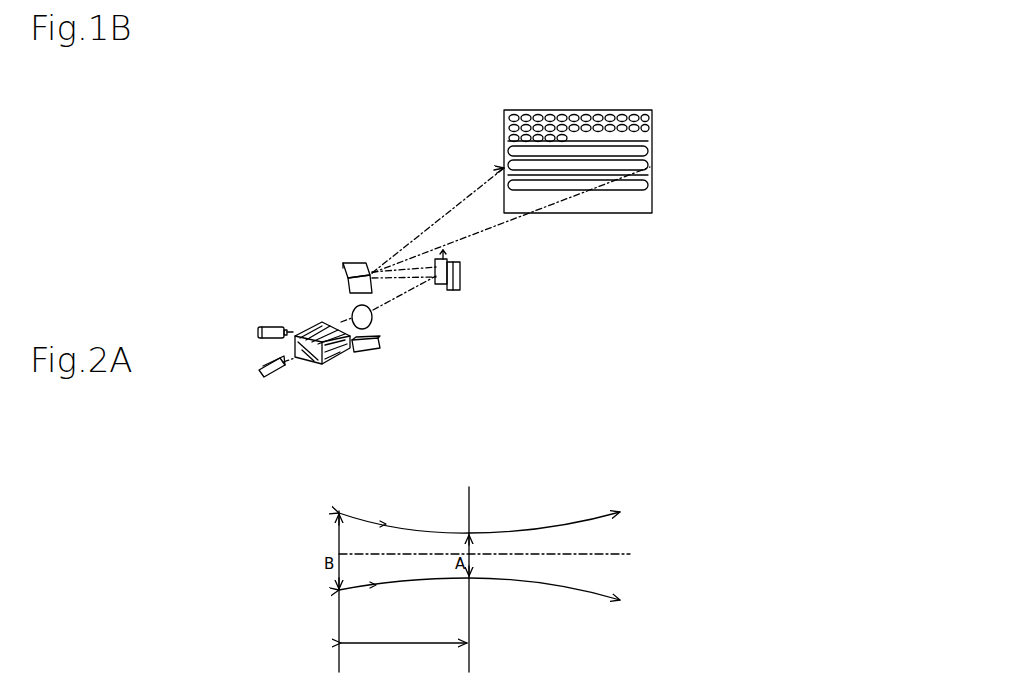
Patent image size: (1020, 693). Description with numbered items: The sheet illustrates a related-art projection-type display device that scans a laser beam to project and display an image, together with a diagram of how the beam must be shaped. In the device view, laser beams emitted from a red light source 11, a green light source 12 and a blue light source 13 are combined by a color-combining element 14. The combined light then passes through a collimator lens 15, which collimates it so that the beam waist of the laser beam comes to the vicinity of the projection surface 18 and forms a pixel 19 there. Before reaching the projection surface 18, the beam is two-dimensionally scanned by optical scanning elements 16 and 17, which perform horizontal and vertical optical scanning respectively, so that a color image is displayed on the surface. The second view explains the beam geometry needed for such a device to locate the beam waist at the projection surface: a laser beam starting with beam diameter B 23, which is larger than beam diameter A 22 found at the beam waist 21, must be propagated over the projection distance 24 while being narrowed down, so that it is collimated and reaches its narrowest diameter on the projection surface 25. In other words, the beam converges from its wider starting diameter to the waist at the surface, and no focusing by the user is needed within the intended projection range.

In FIG. 1B, the red light source 11 is at (378, 346).
In FIG. 1B, the green light source 12 is at (276, 326).
In FIG. 1B, the blue light source 13 is at (278, 368).
In FIG. 1B, the color-combining element 14 is at (322, 357).
In FIG. 1B, the collimator lens 15 is at (373, 316).
In FIG. 1B, the optical scanning element 16 is at (462, 283).
In FIG. 1B, the optical scanning element 17 is at (343, 270).
In FIG. 1B, the projection surface 18 is at (598, 213).
In FIG. 1B, the pixel 19 is at (505, 116).
In FIG. 2A, the beam waist 21 is at (472, 580).
In FIG. 2A, the beam diameter A 22 is at (470, 566).
In FIG. 2A, the beam diameter B 23 is at (338, 527).
In FIG. 2A, the projection distance 24 is at (404, 655).
In FIG. 2A, the projection surface 25 is at (470, 512).